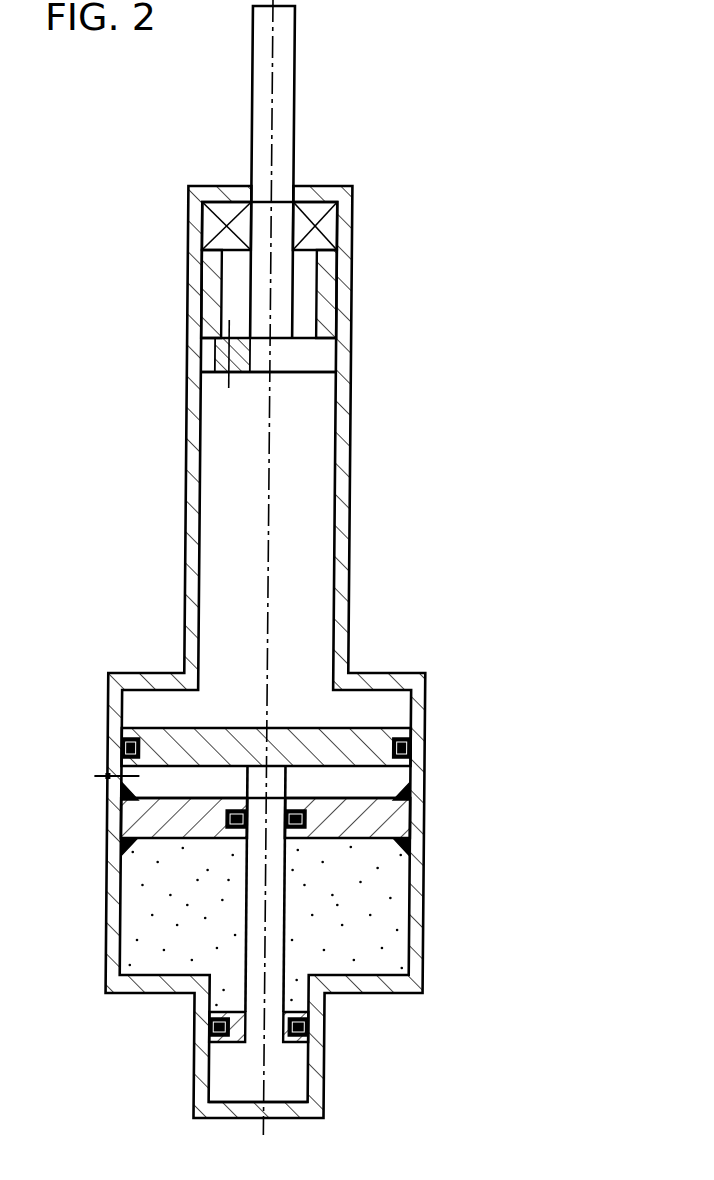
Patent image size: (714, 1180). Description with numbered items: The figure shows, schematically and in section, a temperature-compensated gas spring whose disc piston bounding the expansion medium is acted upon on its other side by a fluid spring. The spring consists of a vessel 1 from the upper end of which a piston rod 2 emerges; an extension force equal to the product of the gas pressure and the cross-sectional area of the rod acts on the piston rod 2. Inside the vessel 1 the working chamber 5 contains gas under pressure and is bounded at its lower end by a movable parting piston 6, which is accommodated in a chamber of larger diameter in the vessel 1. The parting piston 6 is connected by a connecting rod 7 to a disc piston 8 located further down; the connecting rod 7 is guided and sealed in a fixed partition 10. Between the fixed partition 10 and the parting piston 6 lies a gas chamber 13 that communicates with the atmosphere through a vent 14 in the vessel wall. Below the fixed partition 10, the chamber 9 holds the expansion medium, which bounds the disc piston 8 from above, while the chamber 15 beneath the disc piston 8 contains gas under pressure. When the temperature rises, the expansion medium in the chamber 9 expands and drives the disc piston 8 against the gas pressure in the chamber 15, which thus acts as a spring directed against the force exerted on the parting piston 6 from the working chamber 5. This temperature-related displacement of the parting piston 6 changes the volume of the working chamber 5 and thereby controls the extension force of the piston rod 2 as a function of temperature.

The vessel 1 is at (254, 652).
The piston rod 2 is at (325, 172).
The working chamber 5 is at (341, 550).
The parting piston 6 is at (265, 653).
The connecting rod 7 is at (164, 889).
The disc piston 8 is at (215, 1056).
The chamber 9 is at (323, 926).
The fixed partition 10 is at (334, 819).
The gas chamber 13 is at (322, 770).
The vent 14 is at (79, 755).
The chamber 15 is at (311, 1083).